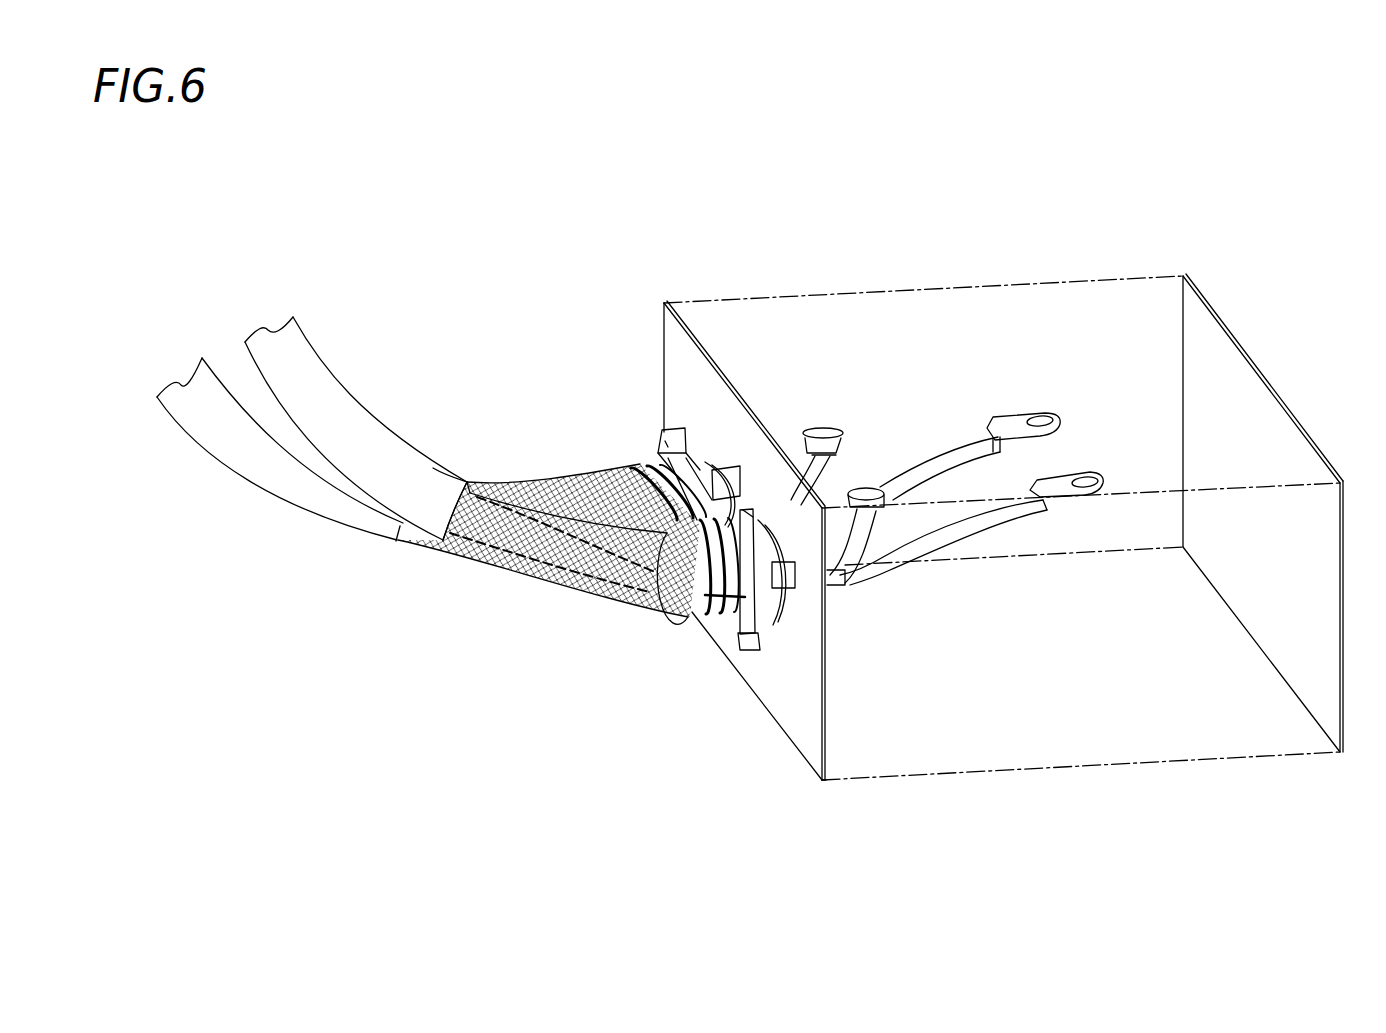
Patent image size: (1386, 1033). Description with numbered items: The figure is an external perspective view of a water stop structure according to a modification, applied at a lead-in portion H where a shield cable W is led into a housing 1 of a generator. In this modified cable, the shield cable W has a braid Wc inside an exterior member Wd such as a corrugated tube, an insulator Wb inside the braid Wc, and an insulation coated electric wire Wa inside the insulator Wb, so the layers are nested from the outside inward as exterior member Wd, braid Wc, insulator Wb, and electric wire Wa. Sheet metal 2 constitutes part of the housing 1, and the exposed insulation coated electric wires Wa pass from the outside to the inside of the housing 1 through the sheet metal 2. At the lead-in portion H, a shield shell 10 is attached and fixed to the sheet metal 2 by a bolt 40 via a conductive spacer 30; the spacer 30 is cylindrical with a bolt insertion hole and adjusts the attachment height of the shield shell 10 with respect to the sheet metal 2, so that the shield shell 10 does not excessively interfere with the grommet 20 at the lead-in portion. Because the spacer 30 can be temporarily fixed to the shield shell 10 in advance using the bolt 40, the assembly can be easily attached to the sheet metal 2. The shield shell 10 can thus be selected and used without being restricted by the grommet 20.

The housing 1 is at (1069, 282).
The sheet metal 2 is at (791, 712).
The shield shell 10 is at (750, 657).
The grommet 20 is at (718, 623).
The conductive spacer 30 is at (790, 586).
The bolt 40 is at (754, 560).
The lead-in portion H is at (625, 441).
The shield cable W is at (366, 418).
The insulation coated electric wire Wa is at (914, 563).
The insulator Wb is at (475, 542).
The braid Wc is at (578, 590).
The exterior member Wd is at (433, 483).